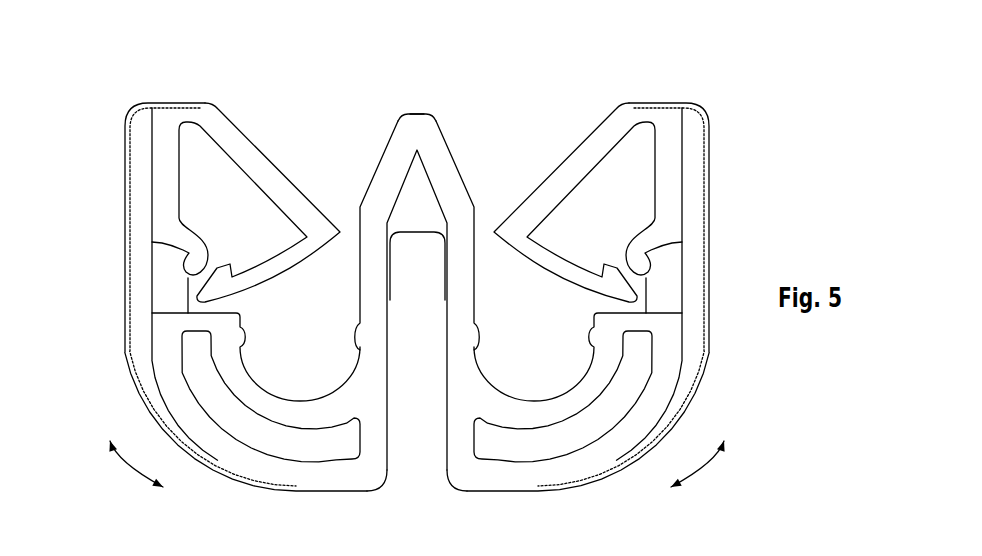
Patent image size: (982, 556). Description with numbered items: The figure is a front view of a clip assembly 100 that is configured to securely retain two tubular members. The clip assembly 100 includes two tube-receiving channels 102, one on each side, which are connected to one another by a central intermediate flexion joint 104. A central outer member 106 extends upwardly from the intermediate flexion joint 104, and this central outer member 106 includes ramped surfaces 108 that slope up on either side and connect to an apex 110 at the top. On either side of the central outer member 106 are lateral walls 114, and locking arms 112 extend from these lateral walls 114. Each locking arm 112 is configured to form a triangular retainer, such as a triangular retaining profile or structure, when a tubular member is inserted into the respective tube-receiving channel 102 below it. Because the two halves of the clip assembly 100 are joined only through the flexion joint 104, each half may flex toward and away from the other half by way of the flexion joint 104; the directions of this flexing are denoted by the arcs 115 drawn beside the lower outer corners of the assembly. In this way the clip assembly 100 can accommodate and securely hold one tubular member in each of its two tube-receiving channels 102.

The clip assembly 100 is at (141, 58).
The tube-receiving channel 102 is at (302, 342).
The intermediate flexion joint 104 is at (422, 207).
The central outer member 106 is at (416, 113).
The ramped surface 108 is at (392, 134).
The apex 110 is at (433, 114).
The locking arm 112 is at (231, 118).
The lateral wall 114 is at (125, 196).
The arc 115 is at (125, 463).